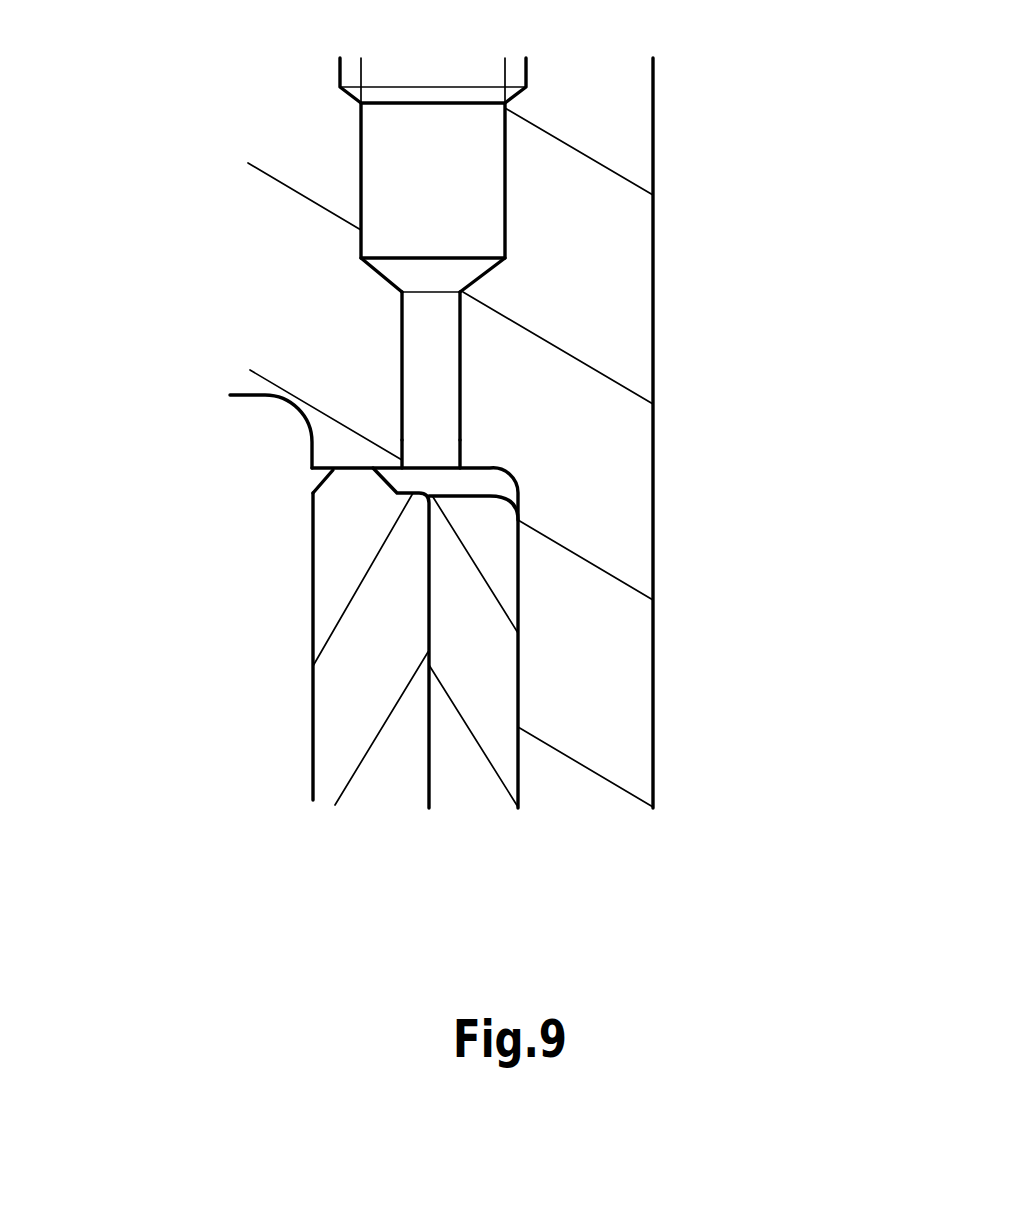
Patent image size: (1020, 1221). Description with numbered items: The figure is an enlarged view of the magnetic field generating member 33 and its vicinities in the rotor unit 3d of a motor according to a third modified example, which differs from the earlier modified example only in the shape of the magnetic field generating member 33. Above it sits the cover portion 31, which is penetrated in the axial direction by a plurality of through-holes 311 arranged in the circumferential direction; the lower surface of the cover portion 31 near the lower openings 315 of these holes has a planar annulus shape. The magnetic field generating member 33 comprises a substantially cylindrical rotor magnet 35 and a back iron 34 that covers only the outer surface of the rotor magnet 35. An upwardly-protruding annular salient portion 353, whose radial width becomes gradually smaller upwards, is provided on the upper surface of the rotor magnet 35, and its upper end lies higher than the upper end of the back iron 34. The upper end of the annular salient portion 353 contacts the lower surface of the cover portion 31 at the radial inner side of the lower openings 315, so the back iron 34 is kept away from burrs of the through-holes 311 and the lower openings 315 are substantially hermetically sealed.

The rotor unit 3d is at (802, 163).
The cover portion 31 is at (688, 232).
The through-holes 311 is at (430, 385).
The lower openings 315 is at (429, 447).
The magnetic field generating member 33 is at (170, 662).
The back iron 34 is at (477, 645).
The rotor magnet 35 is at (385, 698).
The annular salient portion 353 is at (350, 480).